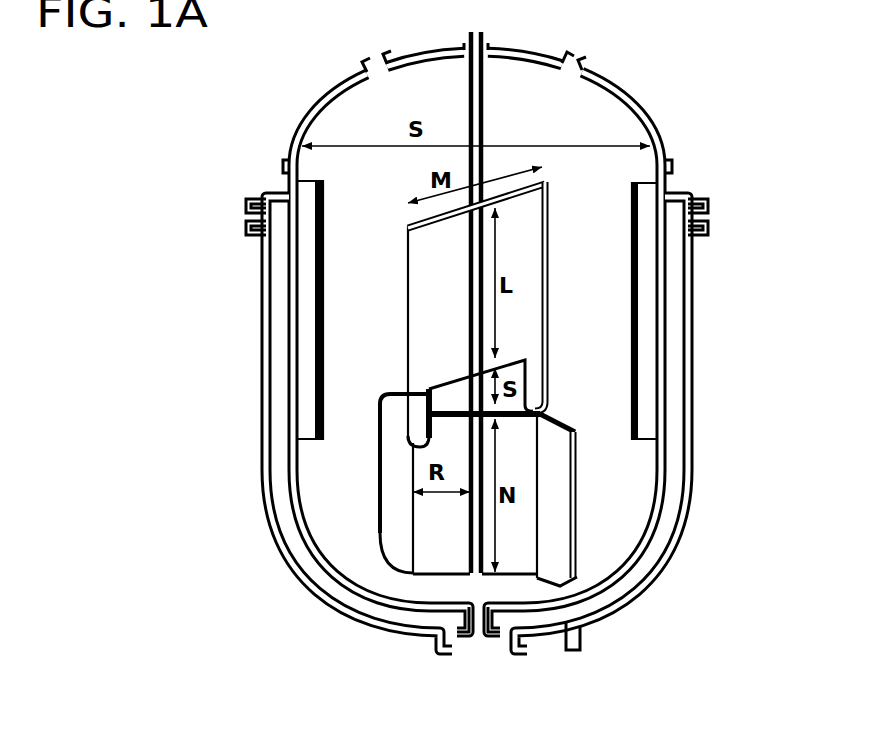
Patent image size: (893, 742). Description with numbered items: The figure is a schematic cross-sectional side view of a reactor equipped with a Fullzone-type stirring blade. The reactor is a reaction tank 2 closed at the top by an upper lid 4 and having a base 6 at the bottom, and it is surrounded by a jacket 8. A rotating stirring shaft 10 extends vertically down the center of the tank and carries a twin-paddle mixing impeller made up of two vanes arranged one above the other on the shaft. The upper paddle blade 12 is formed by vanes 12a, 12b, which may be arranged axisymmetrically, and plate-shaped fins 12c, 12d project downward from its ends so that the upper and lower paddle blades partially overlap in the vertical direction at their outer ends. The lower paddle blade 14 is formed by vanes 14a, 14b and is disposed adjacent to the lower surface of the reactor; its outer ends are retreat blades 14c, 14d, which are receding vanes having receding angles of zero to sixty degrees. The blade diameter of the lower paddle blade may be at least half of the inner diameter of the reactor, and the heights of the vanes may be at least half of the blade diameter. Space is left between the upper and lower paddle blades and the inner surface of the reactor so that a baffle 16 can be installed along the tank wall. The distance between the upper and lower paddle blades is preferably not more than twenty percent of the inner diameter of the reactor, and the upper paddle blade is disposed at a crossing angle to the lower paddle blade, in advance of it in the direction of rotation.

The reaction tank 2 is at (290, 586).
The upper lid 4 is at (650, 112).
The base 6 is at (440, 628).
The jacket 8 is at (694, 408).
The rotating stirring shaft 10 is at (484, 110).
The upper paddle blade 12 is at (479, 314).
The vane 12a is at (549, 303).
The vane 12b is at (406, 296).
The fin 12c is at (549, 360).
The fin 12d is at (417, 397).
The lower paddle blade 14 is at (471, 534).
The vane 14a is at (517, 555).
The vane 14b is at (428, 553).
The retreat blade 14c is at (544, 546).
The retreat blade 14d is at (397, 508).
The baffle 16 is at (304, 338).